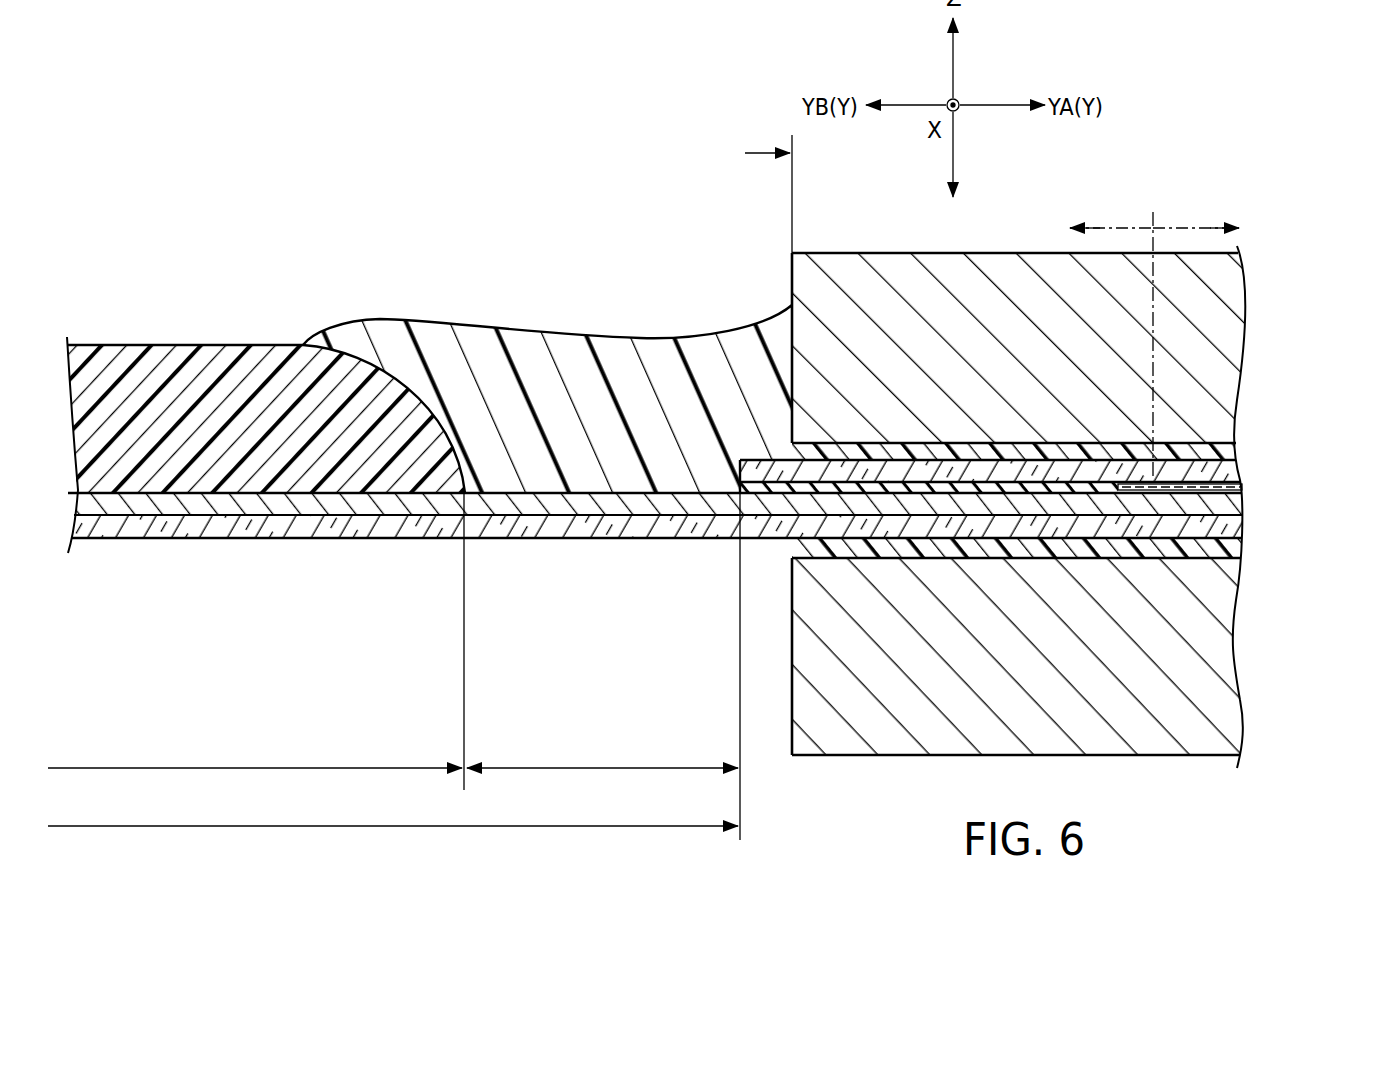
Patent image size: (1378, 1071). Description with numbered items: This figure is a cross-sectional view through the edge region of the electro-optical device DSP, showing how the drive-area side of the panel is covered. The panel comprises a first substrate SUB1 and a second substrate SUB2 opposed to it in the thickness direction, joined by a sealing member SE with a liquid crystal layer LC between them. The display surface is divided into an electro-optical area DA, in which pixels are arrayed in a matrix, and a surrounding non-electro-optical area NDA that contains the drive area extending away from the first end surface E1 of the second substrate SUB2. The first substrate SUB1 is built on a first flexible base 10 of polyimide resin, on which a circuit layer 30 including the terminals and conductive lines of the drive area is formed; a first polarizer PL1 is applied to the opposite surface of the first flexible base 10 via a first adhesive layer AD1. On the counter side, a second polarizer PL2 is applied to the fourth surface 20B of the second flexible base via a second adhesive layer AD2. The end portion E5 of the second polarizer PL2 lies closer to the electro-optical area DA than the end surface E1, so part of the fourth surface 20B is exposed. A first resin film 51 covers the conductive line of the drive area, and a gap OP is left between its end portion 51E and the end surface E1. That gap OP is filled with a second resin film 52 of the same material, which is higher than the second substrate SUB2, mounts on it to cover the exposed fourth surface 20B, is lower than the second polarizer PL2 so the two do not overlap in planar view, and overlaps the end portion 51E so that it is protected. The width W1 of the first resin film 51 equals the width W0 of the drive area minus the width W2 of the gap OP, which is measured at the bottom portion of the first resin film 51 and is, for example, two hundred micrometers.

The first resin film 51 is at (266, 422).
The end portion of first resin film 51E is at (180, 350).
The second resin film 52 is at (547, 361).
The first end surface of second substrate E1 is at (735, 476).
The fourth surface of second flexible base 20B is at (757, 459).
The end portion of second polarizer E5 is at (791, 287).
The gap OP is at (546, 318).
The sealing member SE is at (886, 488).
The liquid crystal layer LC is at (1242, 487).
The non-electro-optical area NDA is at (1084, 228).
The electro-optical area DA is at (1215, 229).
The electro-optical device DSP is at (712, 490).
The first polarizer PL1 is at (1230, 664).
The second polarizer PL2 is at (1031, 340).
The first adhesive layer AD1 is at (1240, 548).
The second adhesive layer AD2 is at (1236, 450).
The first substrate SUB1 is at (712, 517).
The second substrate SUB2 is at (1238, 472).
The first flexible base 10 is at (1287, 497).
The circuit layer 30 is at (1240, 505).
The width of drive area W0 is at (393, 811).
The width of first resin film W1 is at (256, 641).
The width of gap W2 is at (603, 666).